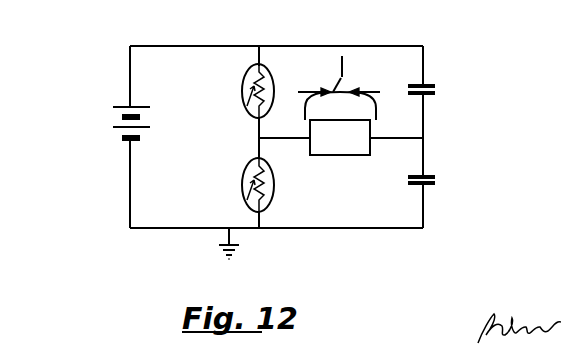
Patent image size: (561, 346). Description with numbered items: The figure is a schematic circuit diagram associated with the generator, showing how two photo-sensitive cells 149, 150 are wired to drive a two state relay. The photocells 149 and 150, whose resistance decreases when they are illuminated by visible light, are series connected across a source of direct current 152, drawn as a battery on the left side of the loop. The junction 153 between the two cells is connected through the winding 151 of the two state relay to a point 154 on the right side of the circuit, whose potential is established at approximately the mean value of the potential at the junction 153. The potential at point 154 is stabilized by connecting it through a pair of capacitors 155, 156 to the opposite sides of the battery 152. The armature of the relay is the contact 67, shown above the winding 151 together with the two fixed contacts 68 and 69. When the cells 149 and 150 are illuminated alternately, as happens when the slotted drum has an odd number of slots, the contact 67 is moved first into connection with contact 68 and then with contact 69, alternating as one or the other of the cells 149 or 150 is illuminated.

The contact 67 is at (342, 78).
The contact 68 is at (322, 89).
The contact 69 is at (368, 82).
The photo-sensitive cell 149 is at (243, 92).
The photo-sensitive cell 150 is at (243, 186).
The winding 151 is at (352, 156).
The source of direct current 152 is at (113, 118).
The junction 153 is at (258, 137).
The point 154 is at (426, 139).
The capacitor 155 is at (437, 180).
The capacitor 156 is at (437, 90).